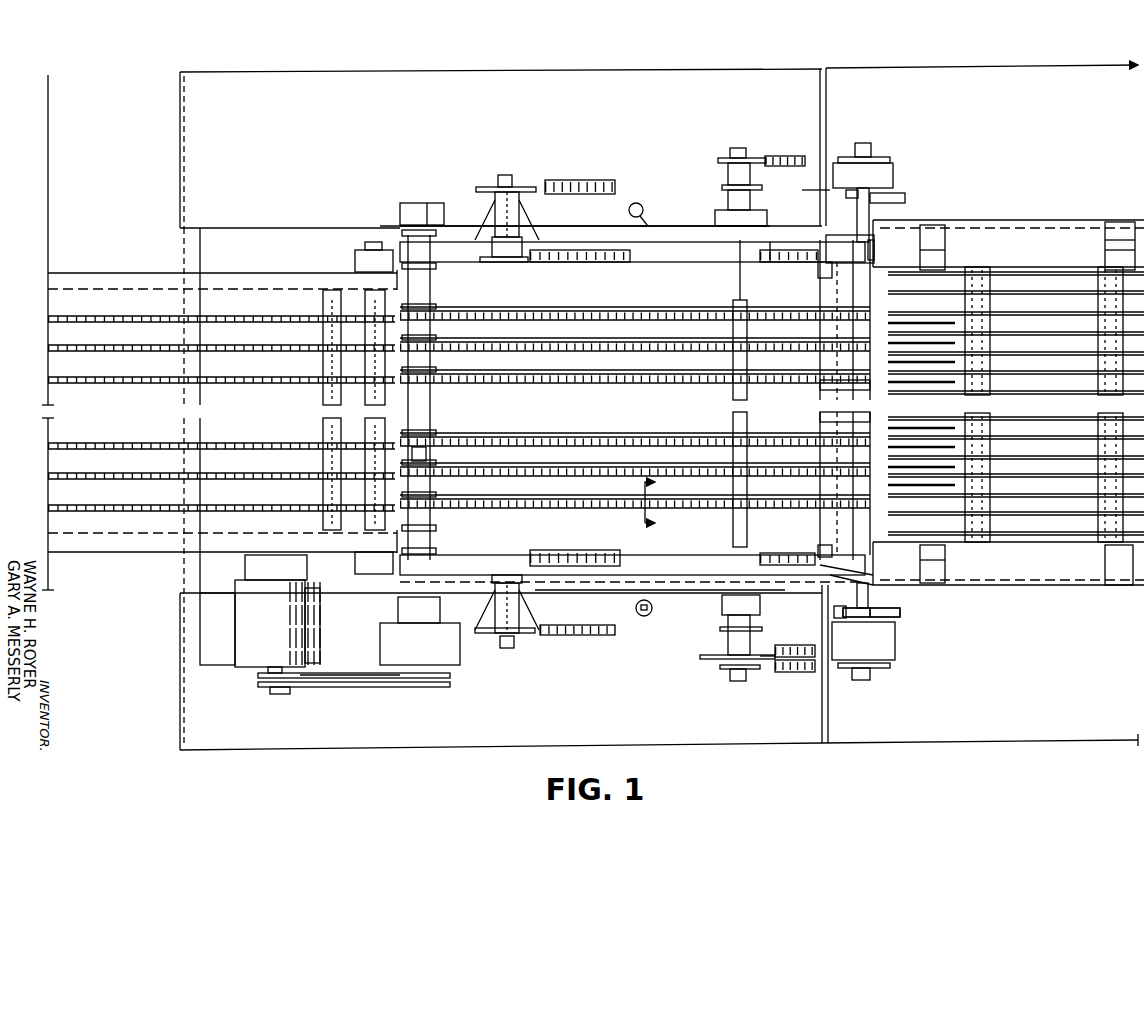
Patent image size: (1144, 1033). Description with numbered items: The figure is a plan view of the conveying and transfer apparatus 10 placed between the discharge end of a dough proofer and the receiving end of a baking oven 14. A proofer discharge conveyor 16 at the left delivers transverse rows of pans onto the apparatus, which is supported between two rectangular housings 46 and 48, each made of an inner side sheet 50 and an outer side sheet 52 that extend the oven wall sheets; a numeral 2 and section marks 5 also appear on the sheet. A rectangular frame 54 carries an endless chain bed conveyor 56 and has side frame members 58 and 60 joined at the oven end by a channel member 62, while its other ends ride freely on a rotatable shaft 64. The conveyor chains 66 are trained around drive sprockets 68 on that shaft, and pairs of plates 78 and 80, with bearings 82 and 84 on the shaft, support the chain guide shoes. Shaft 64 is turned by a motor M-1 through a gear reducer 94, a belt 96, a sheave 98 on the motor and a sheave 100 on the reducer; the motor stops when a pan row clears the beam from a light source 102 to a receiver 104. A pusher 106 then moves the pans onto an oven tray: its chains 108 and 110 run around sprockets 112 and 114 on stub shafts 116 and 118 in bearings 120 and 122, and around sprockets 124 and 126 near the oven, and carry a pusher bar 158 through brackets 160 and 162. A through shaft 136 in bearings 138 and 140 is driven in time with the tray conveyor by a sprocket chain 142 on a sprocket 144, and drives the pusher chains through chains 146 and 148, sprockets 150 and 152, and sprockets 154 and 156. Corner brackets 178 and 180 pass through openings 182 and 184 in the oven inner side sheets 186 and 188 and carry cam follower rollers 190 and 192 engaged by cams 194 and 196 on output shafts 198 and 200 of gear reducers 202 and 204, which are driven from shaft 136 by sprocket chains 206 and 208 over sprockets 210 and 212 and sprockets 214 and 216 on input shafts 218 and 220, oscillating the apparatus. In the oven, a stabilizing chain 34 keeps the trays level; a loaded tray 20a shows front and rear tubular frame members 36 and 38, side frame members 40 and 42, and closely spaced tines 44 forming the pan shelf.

The frame end line 2 is at (27, 313).
The section line 5- 5 is at (660, 500).
The conveying and transfer apparatus 10 is at (560, 176).
The baking oven 14 is at (1055, 67).
The proofer discharge conveyor 16 is at (128, 316).
The tray 20a is at (1060, 268).
The stabilizing chain 34 is at (1115, 224).
The front tubular frame member 36 is at (986, 410).
The rear tubular frame member 38 is at (1100, 412).
The side frame member 40 is at (1070, 543).
The side frame member 42 is at (1006, 268).
The rods or tines 44 is at (1010, 328).
The housing 46 is at (458, 748).
The housing 48 is at (438, 70).
The inner side sheet 50 is at (238, 228).
The outer side sheet 52 is at (272, 72).
The rectangular frame 54 is at (672, 263).
The endless chain bed conveyor 56 is at (590, 310).
The side frame member 58 is at (672, 557).
The side frame member 60 is at (718, 262).
The channel member 62 is at (850, 390).
The rotatable shaft 64 is at (428, 398).
The endless chains 66 is at (525, 383).
The drive sprockets 68 is at (294, 410).
The plate 78 is at (615, 436).
The plate 80 is at (614, 446).
The bearing 82 is at (432, 436).
The bearing 84 is at (432, 452).
The gear reducer 94 is at (458, 658).
The belt 96 is at (356, 688).
The sheave 98 is at (282, 690).
The sheave 100 is at (398, 688).
The light source 102 is at (629, 210).
The receiver 104 is at (636, 608).
The pusher 106 is at (816, 328).
The endless chain 108 is at (556, 552).
The endless chain 110 is at (548, 262).
The sprocket 112 is at (492, 556).
The sprocket 114 is at (505, 262).
The stub shaft 116 is at (508, 648).
The stub shaft 118 is at (505, 175).
The bearing 120 is at (520, 612).
The bearing 122 is at (520, 212).
The sprocket 124 is at (880, 594).
The sprocket 126 is at (875, 246).
The through shaft 136 is at (732, 418).
The bearing 138 is at (722, 600).
The bearing 140 is at (715, 220).
The sprocket chain 142 is at (795, 648).
The sprocket 144 is at (716, 659).
The sprocket chain 146 is at (590, 636).
The sprocket chain 148 is at (594, 180).
The sprocket 150 is at (720, 631).
The sprocket 152 is at (720, 182).
The sprocket 154 is at (520, 636).
The sprocket 156 is at (495, 187).
The pusher bar 158 is at (820, 419).
The bracket 160 is at (818, 550).
The bracket 162 is at (820, 273).
The corner bracket 178 is at (873, 590).
The corner bracket 180 is at (880, 219).
The opening 182 is at (873, 584).
The opening 184 is at (880, 222).
The inner side sheet 186 is at (1028, 586).
The inner side sheet 188 is at (1036, 220).
The cam follower roller 190 is at (872, 620).
The cam follower roller 192 is at (871, 195).
The cam 194 is at (886, 617).
The cam 196 is at (873, 199).
The output shaft 198 is at (834, 618).
The output shaft 200 is at (830, 191).
The gear reducer 202 is at (895, 650).
The gear reducer 204 is at (893, 178).
The sprocket chain 206 is at (795, 674).
The sprocket chain 208 is at (782, 156).
The sprocket 210 is at (732, 674).
The sprocket 212 is at (737, 150).
The sprocket 214 is at (878, 668).
The sprocket 216 is at (853, 158).
The input shaft 218 is at (866, 681).
The input shaft 220 is at (864, 143).
The motor M-1 is at (244, 666).